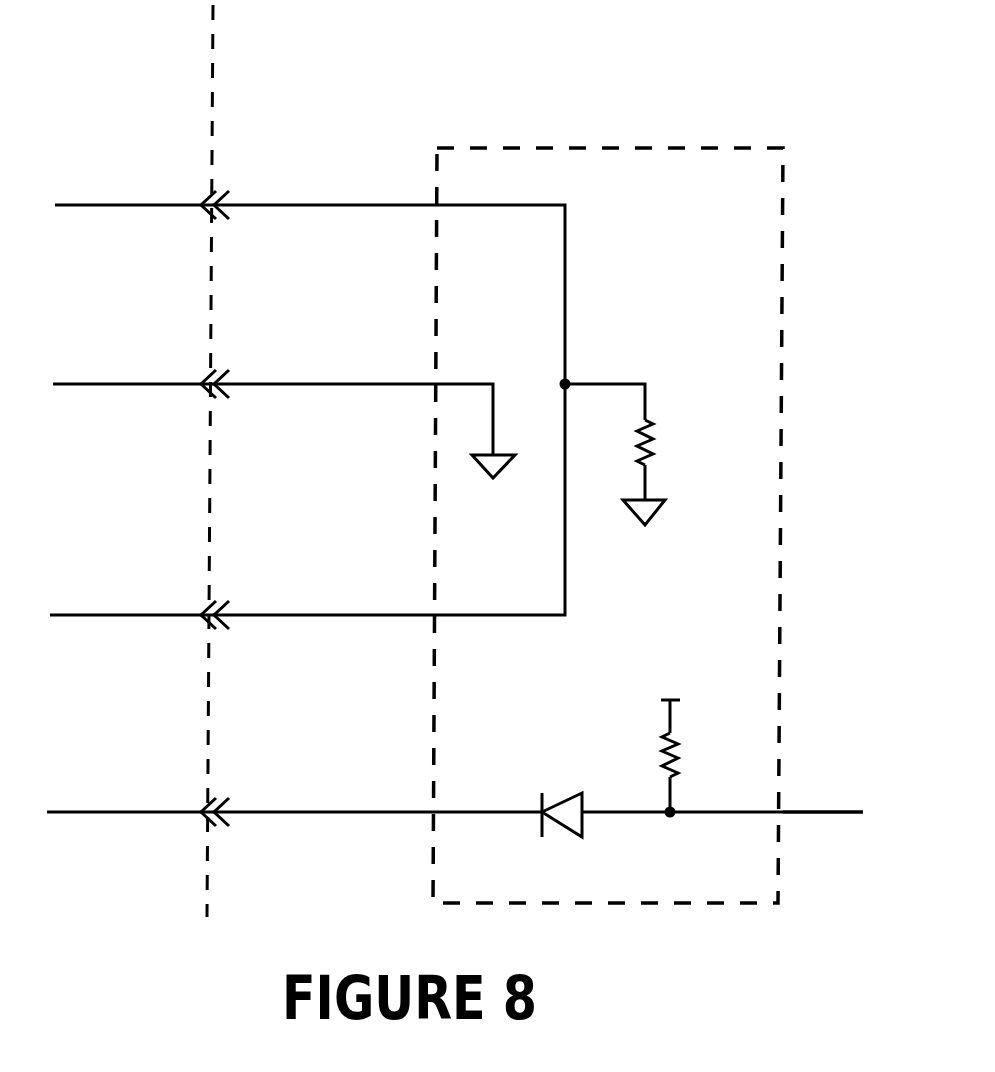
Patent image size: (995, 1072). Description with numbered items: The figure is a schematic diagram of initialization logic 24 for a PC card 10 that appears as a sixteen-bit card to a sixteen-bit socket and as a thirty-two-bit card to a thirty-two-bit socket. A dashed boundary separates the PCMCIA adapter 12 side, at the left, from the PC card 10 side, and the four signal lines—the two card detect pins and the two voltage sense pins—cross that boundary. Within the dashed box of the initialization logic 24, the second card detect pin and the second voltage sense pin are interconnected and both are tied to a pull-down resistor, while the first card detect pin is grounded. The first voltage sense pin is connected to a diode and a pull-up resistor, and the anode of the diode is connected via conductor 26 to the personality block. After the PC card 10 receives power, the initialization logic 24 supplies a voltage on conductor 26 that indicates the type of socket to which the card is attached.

The PCMCIA adapter 12 is at (143, 48).
The PC card 10 is at (488, 50).
The initialization logic 24 is at (726, 148).
The conductor 26 is at (825, 812).